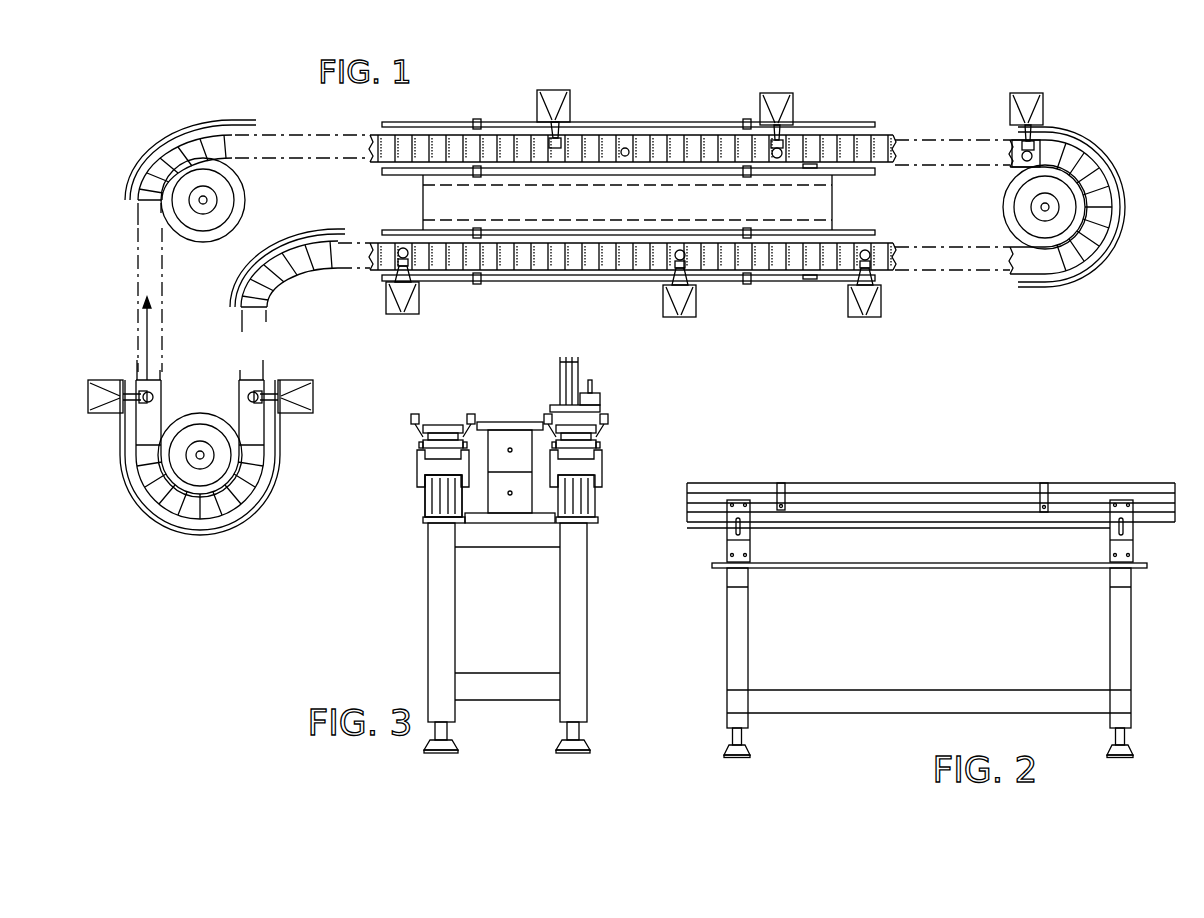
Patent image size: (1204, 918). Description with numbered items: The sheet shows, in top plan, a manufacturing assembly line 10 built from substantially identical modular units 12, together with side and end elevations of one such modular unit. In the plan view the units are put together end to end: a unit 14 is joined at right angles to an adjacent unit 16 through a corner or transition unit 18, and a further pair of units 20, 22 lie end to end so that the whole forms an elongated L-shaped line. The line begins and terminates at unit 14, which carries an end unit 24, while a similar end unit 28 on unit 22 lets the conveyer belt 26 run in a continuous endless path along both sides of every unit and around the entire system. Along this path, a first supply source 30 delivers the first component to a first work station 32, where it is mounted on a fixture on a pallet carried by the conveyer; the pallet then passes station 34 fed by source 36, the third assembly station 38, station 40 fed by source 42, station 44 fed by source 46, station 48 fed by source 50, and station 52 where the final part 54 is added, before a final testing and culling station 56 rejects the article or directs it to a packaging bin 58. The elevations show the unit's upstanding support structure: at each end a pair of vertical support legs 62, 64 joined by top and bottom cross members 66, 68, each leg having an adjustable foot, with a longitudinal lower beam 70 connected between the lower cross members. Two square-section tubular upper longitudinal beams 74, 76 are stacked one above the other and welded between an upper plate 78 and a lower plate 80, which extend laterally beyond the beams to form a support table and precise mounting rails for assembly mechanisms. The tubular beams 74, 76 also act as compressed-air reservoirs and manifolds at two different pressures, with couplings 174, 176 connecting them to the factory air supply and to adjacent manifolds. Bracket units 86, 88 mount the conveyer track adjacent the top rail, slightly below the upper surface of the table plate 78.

In FIG. 1, the assembly line 10 is at (258, 96).
In FIG. 1, the modular unit 12 is at (632, 175).
In FIG. 1, the unit 14 is at (138, 345).
In FIG. 1, the unit 16 is at (400, 133).
In FIG. 1, the corner or transition unit 18 is at (240, 203).
In FIG. 1, the unit 20 is at (688, 125).
In FIG. 1, the unit 22 is at (853, 125).
In FIG. 1, the end unit 24 is at (255, 495).
In FIG. 1, the conveyer belt 26 is at (140, 196).
In FIG. 1, the end unit 28 is at (1105, 186).
In FIG. 1, the first supply source 30 is at (100, 392).
In FIG. 1, the first work station 32 is at (148, 408).
In FIG. 1, the station 34 is at (545, 140).
In FIG. 1, the source 36 is at (553, 95).
In FIG. 1, the third assembly station 38 is at (770, 98).
In FIG. 1, the station 40 is at (1038, 147).
In FIG. 1, the source 42 is at (1023, 100).
In FIG. 1, the station 44 is at (848, 272).
In FIG. 1, the source 46 is at (850, 313).
In FIG. 1, the station 48 is at (662, 270).
In FIG. 1, the source 50 is at (672, 318).
In FIG. 1, the station 52 is at (414, 284).
In FIG. 1, the final part 54 is at (418, 312).
In FIG. 1, the final testing and culling station 56 is at (262, 408).
In FIG. 1, the packaging bin 58 is at (292, 387).
In FIG. 3, the support leg 62 is at (441, 627).
In FIG. 3, the support leg 64 is at (578, 586).
In FIG. 3, the top cross member 66 is at (523, 550).
In FIG. 3, the bottom cross member 68 is at (515, 683).
In FIG. 2, the longitudinal lower beam 70 is at (825, 690).
In FIG. 3, the upper longitudinal beam 74 is at (504, 440).
In FIG. 2, the upper longitudinal beam 74 is at (975, 522).
In FIG. 3, the upper longitudinal beam 76 is at (488, 520).
In FIG. 2, the upper longitudinal beam 76 is at (1015, 550).
In FIG. 3, the upper plate 78 is at (490, 425).
In FIG. 3, the lower plate 80 is at (530, 520).
In FIG. 3, the bracket unit 86 is at (430, 462).
In FIG. 2, the bracket unit 86 is at (727, 530).
In FIG. 3, the bracket unit 88 is at (440, 499).
In FIG. 3, the coupling 174 is at (512, 448).
In FIG. 3, the coupling 176 is at (509, 496).